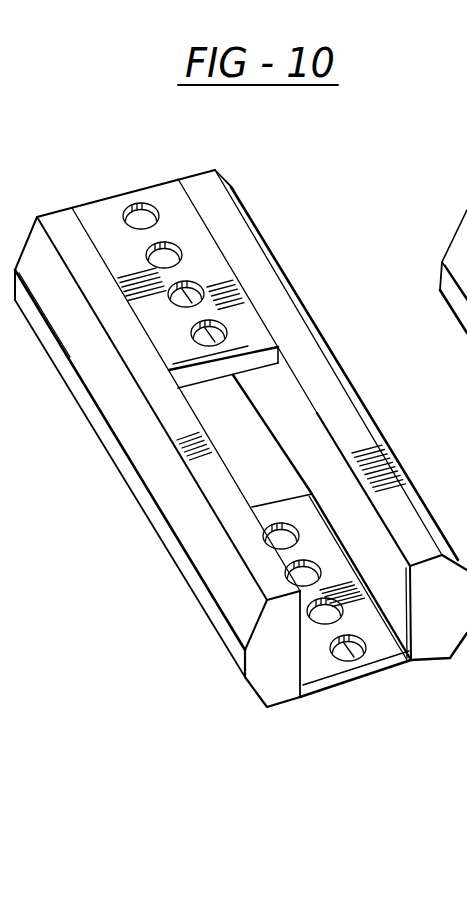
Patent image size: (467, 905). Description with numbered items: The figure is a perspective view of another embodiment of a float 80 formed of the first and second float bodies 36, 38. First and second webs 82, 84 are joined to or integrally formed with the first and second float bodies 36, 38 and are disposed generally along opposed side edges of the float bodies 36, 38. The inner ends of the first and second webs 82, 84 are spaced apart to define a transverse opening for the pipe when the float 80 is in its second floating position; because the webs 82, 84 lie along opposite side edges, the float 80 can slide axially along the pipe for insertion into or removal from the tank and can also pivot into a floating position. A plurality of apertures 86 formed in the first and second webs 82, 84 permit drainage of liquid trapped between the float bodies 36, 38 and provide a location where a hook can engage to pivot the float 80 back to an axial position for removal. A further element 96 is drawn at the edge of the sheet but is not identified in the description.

The float 80 is at (25, 200).
The first web 82 is at (391, 659).
The second web 84 is at (195, 233).
The apertures 86 is at (142, 212).
The first float body 36 is at (356, 349).
The second float body 38 is at (138, 457).
The adjacent block 96 is at (449, 303).